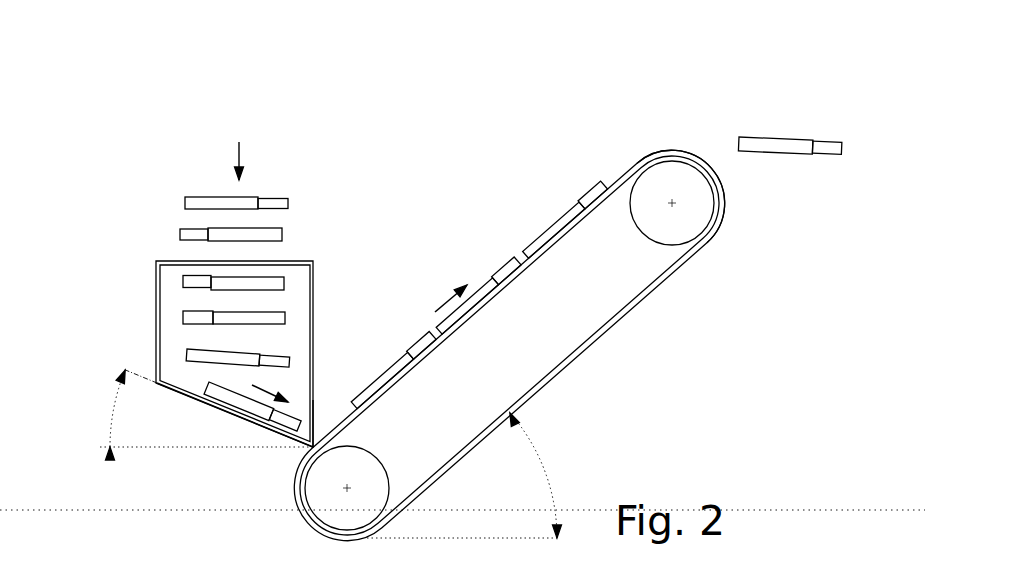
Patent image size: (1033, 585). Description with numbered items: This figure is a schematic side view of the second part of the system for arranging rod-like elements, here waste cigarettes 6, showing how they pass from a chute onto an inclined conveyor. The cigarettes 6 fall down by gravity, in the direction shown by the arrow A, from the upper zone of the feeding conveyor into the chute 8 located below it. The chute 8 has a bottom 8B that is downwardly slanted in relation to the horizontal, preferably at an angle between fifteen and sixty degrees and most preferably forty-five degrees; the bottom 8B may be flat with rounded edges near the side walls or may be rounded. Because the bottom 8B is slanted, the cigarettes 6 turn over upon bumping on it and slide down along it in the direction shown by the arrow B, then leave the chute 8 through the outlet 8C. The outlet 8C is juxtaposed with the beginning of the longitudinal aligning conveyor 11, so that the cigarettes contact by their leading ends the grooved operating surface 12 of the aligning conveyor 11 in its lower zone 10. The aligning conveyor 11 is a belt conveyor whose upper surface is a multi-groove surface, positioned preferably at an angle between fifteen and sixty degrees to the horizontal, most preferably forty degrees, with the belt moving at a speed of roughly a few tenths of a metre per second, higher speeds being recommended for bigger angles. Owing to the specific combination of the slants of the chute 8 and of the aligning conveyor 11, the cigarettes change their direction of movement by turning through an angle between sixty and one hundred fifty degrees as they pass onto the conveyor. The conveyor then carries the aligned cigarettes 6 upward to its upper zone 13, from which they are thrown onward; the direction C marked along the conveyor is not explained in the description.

The cigarettes 6 is at (212, 200).
The chute 8 is at (157, 293).
The chute bottom 8B is at (250, 422).
The outlet 8C is at (323, 412).
The lower zone 10 is at (267, 509).
The aligning conveyor 11 is at (587, 375).
The grooved operating surface 12 is at (613, 170).
The upper zone 13 is at (705, 130).
The arrow A is at (241, 142).
The arrow B is at (252, 385).
The conveying direction C is at (450, 296).